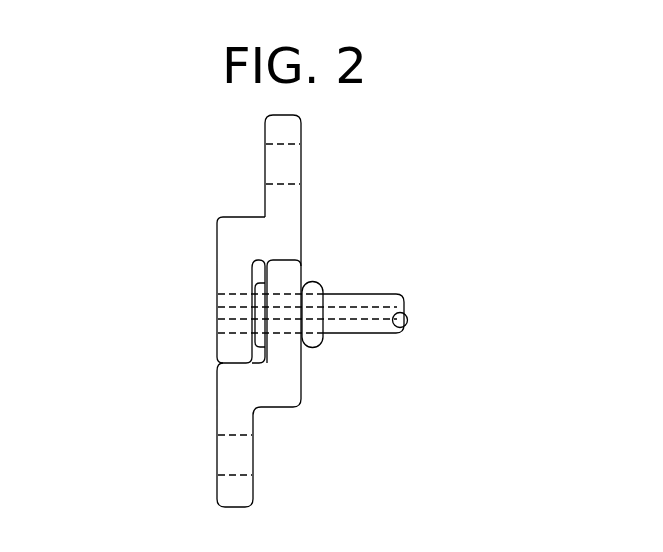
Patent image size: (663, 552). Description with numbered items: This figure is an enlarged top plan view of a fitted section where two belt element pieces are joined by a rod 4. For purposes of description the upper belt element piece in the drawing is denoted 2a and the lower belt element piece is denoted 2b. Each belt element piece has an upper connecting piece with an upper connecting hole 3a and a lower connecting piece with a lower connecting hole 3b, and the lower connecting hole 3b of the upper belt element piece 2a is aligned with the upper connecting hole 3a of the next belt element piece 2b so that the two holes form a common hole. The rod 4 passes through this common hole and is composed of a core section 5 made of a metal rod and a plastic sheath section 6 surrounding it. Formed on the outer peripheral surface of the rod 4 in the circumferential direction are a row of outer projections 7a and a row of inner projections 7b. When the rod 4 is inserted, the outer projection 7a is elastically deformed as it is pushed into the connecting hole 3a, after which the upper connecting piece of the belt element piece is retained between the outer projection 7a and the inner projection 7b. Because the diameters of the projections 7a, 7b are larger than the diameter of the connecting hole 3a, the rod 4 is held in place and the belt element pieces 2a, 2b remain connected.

The upper belt element piece 2a is at (258, 218).
The lower belt element piece 2b is at (229, 405).
The upper connecting hole 3a is at (291, 293).
The lower connecting hole 3b is at (222, 306).
The rod 4 is at (386, 332).
The core section 5 is at (345, 321).
The sheath section 6 is at (378, 297).
The outer projection 7a is at (268, 338).
The inner projection 7b is at (320, 340).